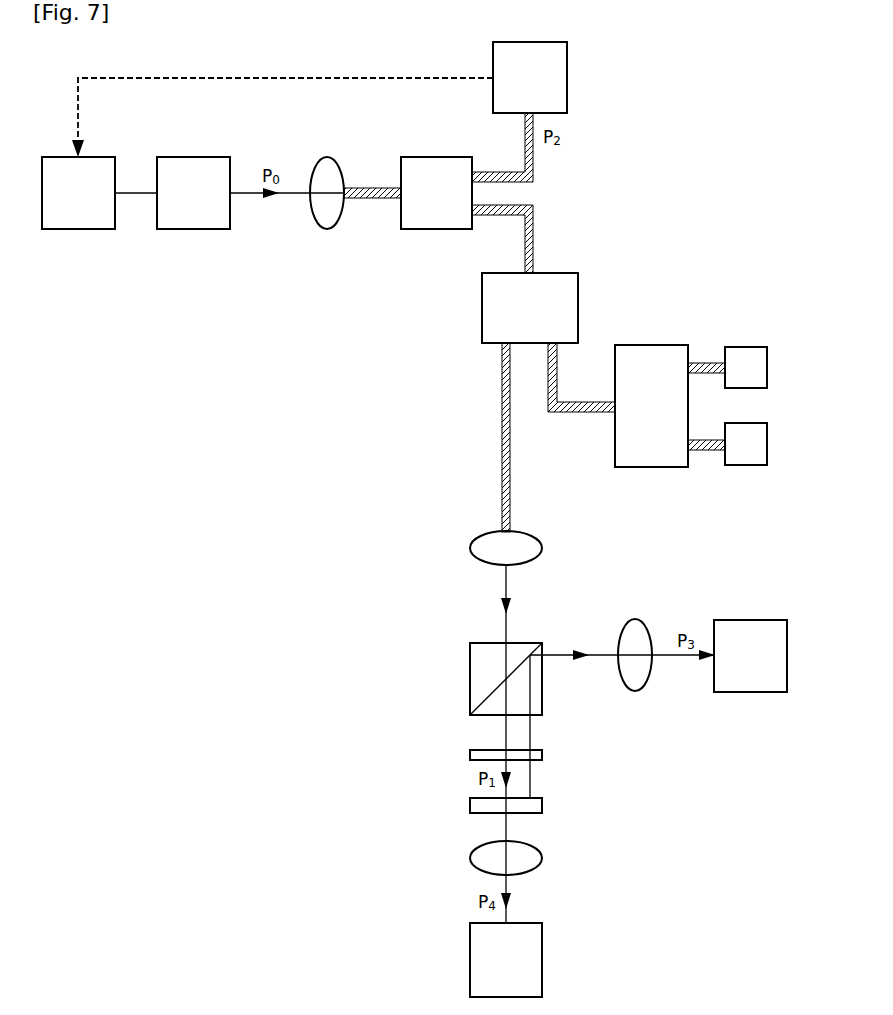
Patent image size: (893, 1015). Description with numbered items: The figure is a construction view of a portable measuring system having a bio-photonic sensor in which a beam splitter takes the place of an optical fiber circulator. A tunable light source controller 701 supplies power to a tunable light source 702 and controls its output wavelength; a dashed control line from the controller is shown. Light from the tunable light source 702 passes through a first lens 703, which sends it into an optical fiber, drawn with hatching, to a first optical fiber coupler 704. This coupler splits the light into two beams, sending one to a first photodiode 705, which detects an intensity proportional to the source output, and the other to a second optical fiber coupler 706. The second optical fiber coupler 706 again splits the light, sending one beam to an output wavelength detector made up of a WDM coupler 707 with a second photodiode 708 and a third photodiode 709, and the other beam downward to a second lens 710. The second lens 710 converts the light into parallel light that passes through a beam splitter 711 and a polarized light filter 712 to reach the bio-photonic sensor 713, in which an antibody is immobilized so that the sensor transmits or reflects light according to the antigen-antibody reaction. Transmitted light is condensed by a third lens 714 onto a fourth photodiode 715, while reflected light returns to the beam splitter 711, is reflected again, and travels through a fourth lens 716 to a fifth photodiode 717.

The tunable light source controller 701 is at (57, 157).
The tunable light source 702 is at (188, 157).
The first lens 703 is at (325, 157).
The first optical fiber coupler 704 is at (433, 157).
The first photodiode 705 is at (567, 73).
The second optical fiber coupler 706 is at (578, 300).
The WDM coupler 707 is at (650, 467).
The second photodiode 708 is at (744, 347).
The third photodiode 709 is at (745, 467).
The second lens 710 is at (470, 548).
The beam splitter 711 is at (470, 677).
The polarized light filter 712 is at (470, 752).
The bio-photonic sensor 713 is at (470, 800).
The third lens 714 is at (470, 855).
The fourth photodiode 715 is at (542, 958).
The fourth lens 716 is at (635, 691).
The fifth photodiode 717 is at (750, 692).